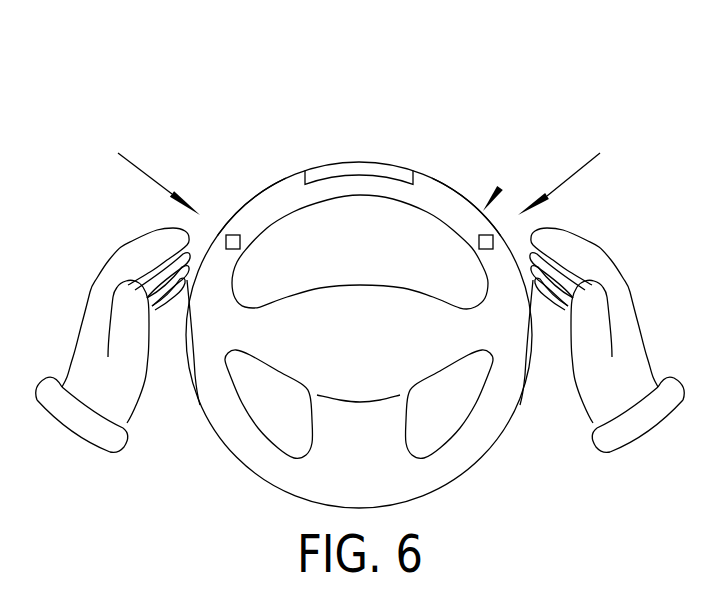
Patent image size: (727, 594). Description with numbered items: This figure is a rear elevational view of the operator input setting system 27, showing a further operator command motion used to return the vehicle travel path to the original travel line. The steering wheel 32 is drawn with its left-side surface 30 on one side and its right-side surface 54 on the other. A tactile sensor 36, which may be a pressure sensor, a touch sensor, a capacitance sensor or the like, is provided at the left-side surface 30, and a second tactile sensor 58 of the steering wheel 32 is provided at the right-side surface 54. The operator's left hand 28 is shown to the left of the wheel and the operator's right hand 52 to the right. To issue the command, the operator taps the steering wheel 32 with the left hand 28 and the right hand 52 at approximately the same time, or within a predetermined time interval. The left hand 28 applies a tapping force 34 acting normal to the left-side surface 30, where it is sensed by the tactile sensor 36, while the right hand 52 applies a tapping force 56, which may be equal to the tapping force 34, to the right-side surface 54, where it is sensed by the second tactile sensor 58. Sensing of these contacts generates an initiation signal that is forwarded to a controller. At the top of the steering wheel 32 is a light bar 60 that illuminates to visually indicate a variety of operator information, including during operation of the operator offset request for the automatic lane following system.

The operator input setting system 27 is at (444, 97).
The left-side surface 30 is at (230, 172).
The steering wheel 32 is at (433, 192).
The light bar 60 is at (352, 171).
The tactile sensor 36 is at (226, 242).
The second tactile sensor 58 is at (493, 242).
The right-side surface 54 is at (500, 188).
The tapping force 34 is at (133, 168).
The tapping force 56 is at (585, 168).
The left hand 28 is at (120, 263).
The right hand 52 is at (600, 263).